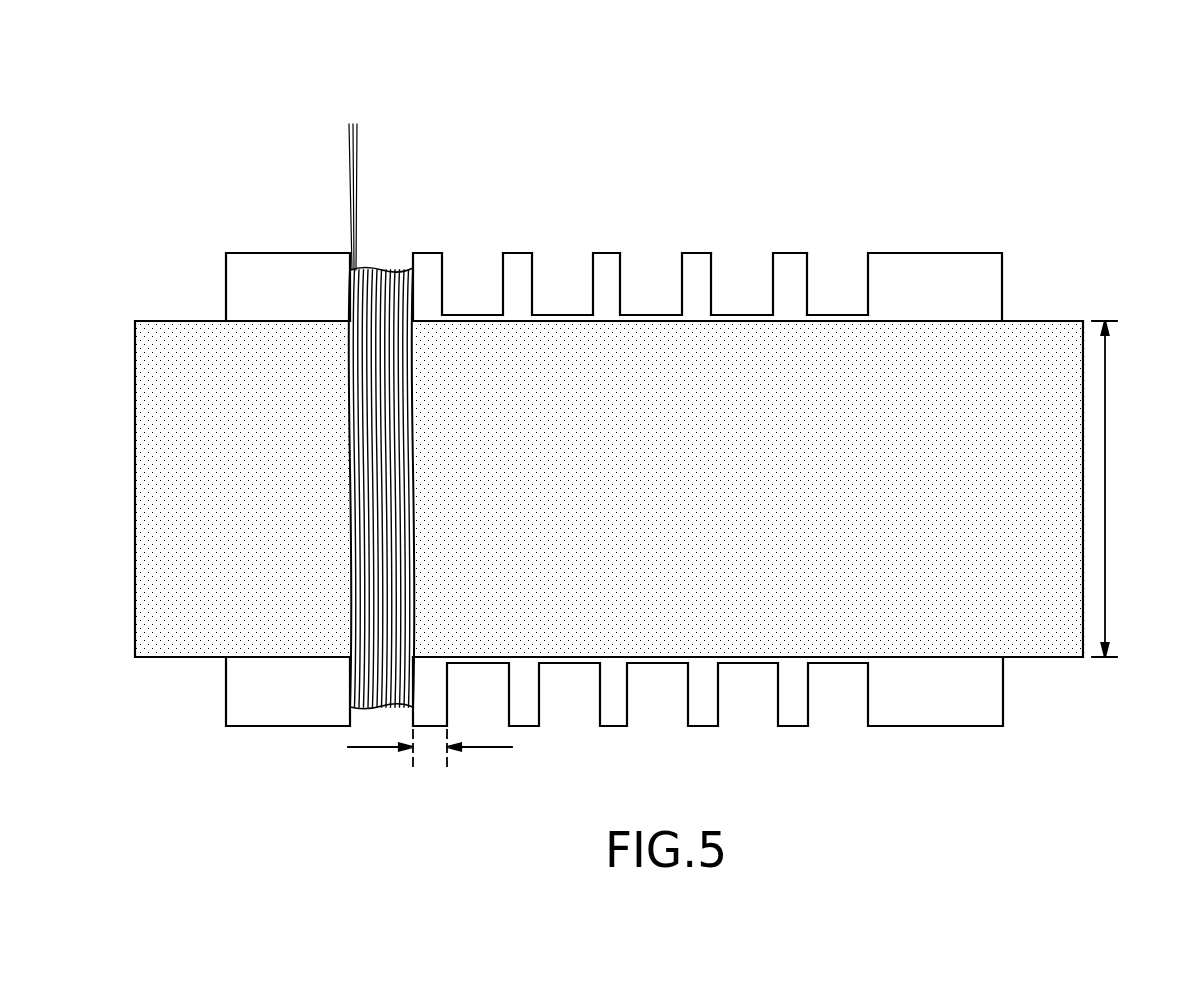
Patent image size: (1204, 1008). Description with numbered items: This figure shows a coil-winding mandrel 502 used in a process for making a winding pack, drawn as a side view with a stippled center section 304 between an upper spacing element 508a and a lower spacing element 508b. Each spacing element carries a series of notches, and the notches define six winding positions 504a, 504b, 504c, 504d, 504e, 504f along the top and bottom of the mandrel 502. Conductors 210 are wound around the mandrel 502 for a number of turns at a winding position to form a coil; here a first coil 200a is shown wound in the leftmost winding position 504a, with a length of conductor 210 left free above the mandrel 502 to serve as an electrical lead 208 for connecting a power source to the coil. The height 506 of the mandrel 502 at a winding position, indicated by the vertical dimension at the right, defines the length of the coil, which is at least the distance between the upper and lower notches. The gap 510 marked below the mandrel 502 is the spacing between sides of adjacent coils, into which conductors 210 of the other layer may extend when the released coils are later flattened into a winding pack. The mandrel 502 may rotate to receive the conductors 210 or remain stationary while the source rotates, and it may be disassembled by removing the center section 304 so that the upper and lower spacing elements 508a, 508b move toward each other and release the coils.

The coil 200a is at (378, 298).
The electrical lead 208 is at (355, 122).
The conductor 210 is at (358, 135).
The removable center section 304 is at (952, 493).
The coil-winding mandrel 502 is at (614, 234).
The winding position 504a is at (385, 257).
The winding position 504b is at (472, 303).
The winding position 504c is at (560, 278).
The winding position 504d is at (642, 295).
The winding position 504e is at (747, 297).
The winding position 504f is at (830, 293).
The height of the mandrel 506 is at (1105, 470).
The upper spacing element 508a is at (318, 305).
The lower spacing element 508b is at (318, 708).
The gap 510 is at (490, 747).